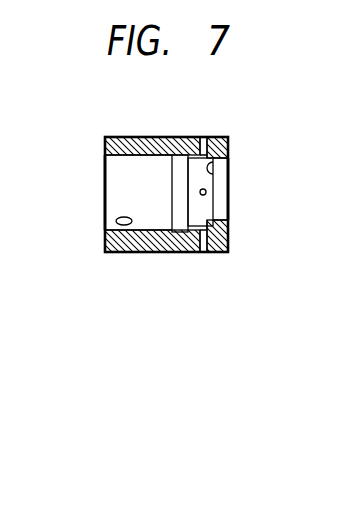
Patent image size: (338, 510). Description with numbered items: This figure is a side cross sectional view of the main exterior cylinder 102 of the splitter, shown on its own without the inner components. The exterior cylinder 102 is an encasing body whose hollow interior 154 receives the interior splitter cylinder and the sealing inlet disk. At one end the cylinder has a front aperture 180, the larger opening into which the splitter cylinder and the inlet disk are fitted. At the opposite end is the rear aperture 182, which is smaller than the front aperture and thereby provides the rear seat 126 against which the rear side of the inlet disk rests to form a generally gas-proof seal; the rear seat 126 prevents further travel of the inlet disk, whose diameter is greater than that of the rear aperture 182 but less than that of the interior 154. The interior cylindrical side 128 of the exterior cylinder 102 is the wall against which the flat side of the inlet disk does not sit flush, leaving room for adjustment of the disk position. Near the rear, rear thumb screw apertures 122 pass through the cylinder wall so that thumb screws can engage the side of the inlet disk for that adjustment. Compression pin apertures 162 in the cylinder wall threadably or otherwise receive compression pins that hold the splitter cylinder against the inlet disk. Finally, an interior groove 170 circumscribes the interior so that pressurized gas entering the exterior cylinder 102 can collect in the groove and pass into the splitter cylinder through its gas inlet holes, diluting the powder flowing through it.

The exterior cylinder 102 is at (113, 137).
The rear thumb screw apertures 122 is at (203, 137).
The rear seat 126 is at (214, 177).
The interior cylindrical side 128 is at (122, 162).
The interior 154 is at (122, 193).
The compression pin apertures 162 is at (125, 225).
The interior groove 170 is at (177, 218).
The front aperture 180 is at (105, 213).
The rear aperture 182 is at (228, 212).